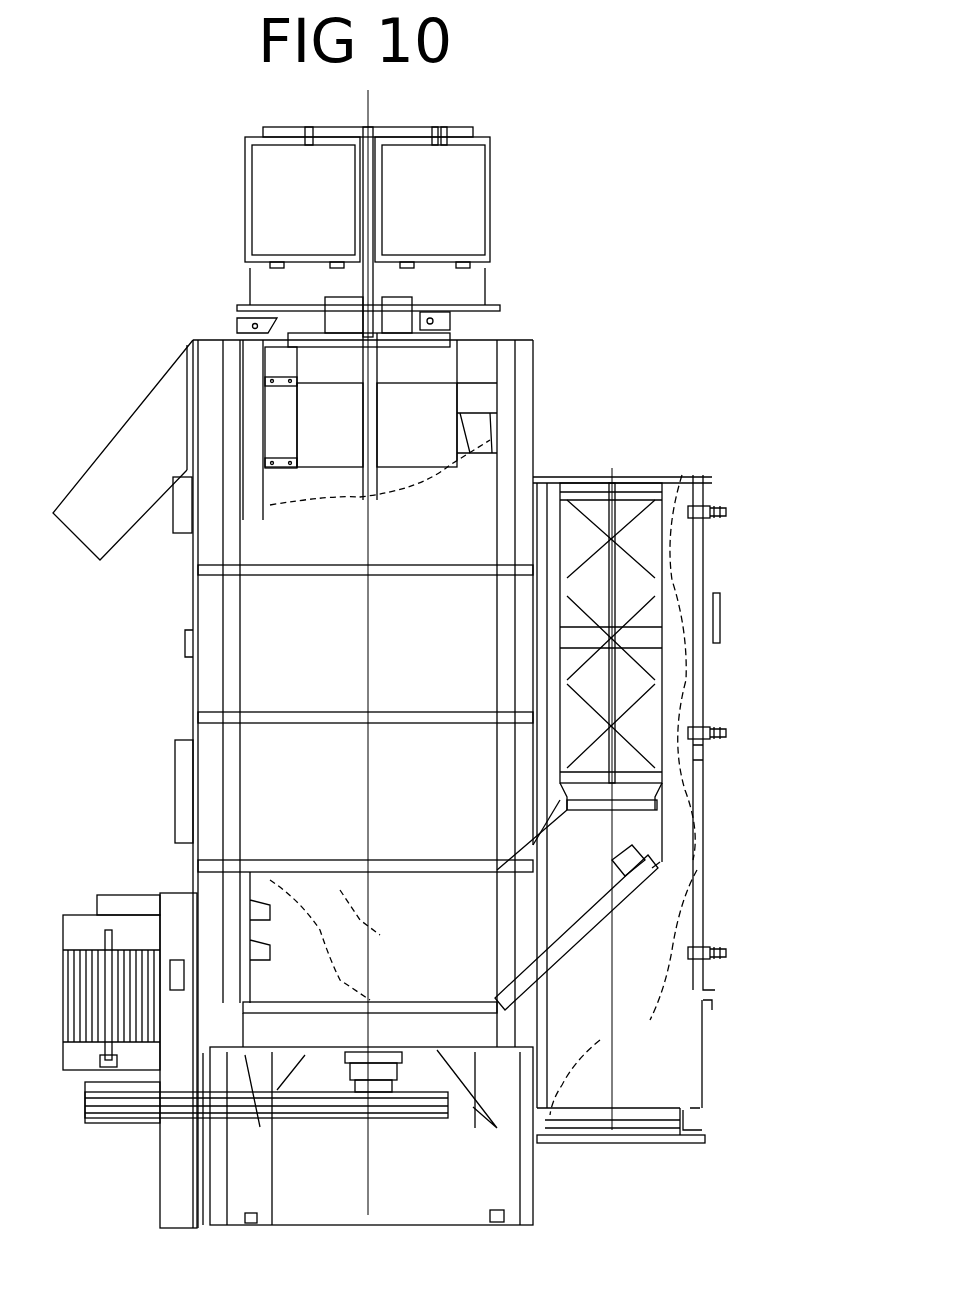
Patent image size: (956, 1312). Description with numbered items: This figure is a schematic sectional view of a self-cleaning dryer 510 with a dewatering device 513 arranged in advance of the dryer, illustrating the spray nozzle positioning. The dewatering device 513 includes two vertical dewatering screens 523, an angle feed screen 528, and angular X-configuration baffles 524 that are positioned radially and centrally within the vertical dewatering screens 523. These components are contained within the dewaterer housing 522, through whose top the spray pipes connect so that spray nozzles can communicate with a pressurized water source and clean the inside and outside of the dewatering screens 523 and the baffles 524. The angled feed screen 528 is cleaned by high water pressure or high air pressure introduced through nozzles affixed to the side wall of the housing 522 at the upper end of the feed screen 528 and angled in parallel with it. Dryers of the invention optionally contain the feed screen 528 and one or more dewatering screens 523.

The self-cleaning dryer 510 is at (183, 320).
The dewatering device 513 is at (672, 470).
The X-configuration baffles 524 is at (648, 572).
The vertical dewatering screens 523 is at (661, 607).
The housing 522 is at (705, 753).
The angle feed screen 528 is at (603, 917).